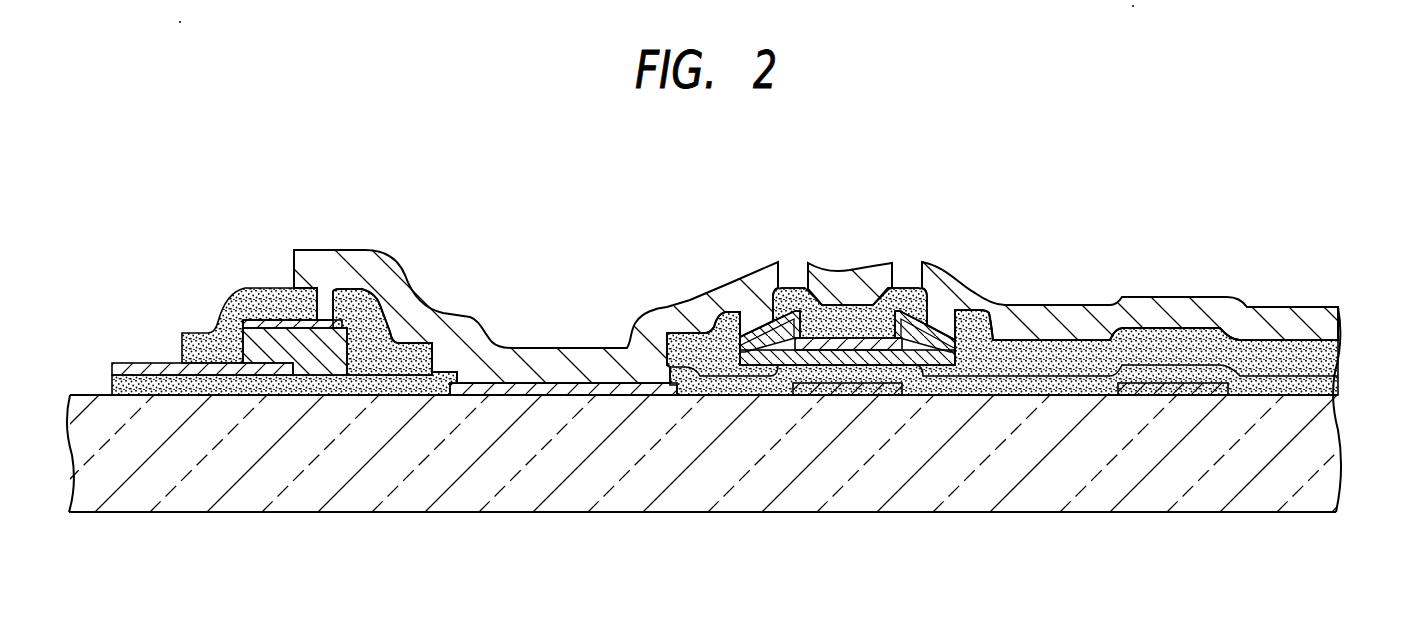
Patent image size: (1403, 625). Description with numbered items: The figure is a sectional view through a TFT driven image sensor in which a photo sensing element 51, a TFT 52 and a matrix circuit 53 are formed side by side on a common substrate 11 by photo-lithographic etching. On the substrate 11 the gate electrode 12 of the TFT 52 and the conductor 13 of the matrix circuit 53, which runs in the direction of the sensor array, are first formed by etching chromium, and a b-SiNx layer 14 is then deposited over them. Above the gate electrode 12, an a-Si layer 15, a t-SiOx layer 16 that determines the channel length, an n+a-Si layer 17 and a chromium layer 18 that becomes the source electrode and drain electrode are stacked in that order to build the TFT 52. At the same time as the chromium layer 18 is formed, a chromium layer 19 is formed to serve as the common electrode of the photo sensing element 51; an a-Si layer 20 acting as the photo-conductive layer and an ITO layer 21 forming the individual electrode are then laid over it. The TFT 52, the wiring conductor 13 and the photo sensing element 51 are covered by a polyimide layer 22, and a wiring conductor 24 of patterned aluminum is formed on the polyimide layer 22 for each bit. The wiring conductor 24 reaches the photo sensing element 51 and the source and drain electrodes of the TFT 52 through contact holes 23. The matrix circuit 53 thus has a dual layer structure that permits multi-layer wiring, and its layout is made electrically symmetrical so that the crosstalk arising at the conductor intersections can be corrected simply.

The substrate 11 is at (1328, 426).
The gate electrode 12 is at (842, 396).
The conductor of the matrix circuit 13 is at (1173, 396).
The b-SiNx layer 14 is at (1205, 365).
The a-Si layer 15 is at (758, 386).
The t-SiOx layer 16 is at (843, 300).
The n+a-Si layer 17 is at (705, 333).
The chromium layer 18 is at (727, 337).
The chromium layer 19 is at (145, 362).
The a-Si layer 20 is at (247, 290).
The ITO layer 21 is at (252, 330).
The polyimide layer 22 is at (363, 302).
The contact hole 23 is at (323, 297).
The wiring conductor 24 is at (557, 360).
The photo sensing element 51 is at (284, 292).
The TFT 52 is at (1004, 366).
The matrix circuit 53 is at (1224, 372).